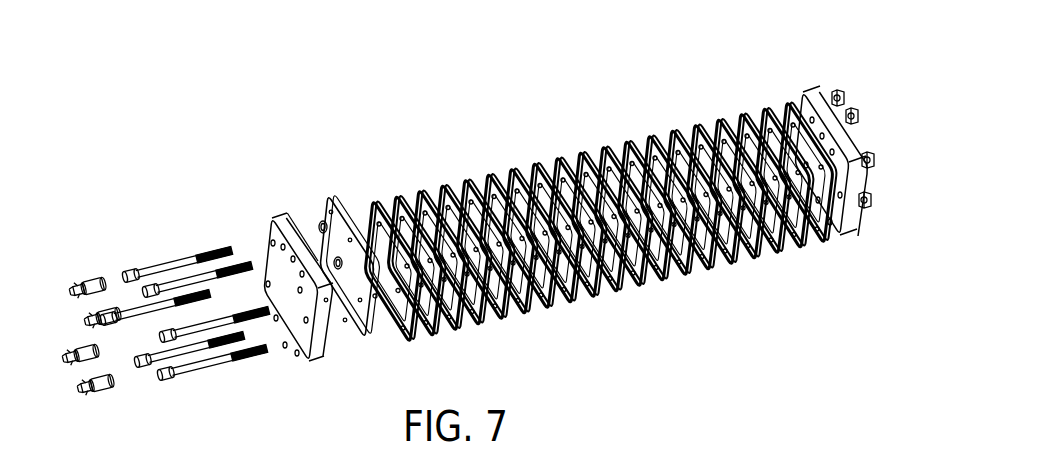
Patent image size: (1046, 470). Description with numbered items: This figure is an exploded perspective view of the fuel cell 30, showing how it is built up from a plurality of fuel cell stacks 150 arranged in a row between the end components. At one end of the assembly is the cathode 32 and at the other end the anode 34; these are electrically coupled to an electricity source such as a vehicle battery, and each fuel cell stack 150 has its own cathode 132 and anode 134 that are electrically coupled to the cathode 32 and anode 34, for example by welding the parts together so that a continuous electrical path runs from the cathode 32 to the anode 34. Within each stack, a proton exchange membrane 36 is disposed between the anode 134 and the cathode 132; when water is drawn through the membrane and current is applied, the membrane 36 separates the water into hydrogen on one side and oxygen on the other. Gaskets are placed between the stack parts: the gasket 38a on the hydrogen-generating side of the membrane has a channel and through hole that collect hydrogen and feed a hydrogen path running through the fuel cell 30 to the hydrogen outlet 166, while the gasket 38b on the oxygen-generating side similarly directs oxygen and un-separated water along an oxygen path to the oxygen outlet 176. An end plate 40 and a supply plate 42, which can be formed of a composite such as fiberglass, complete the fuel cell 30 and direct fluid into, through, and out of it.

The fuel cell 30 is at (280, 86).
The cathode 32 is at (331, 195).
The anode 34 is at (795, 102).
The proton exchange membrane 36 is at (723, 240).
The gasket 38a is at (707, 270).
The gasket 38b is at (743, 253).
The end plate 40 is at (812, 88).
The supply plate 42 is at (283, 217).
The cathode 132 is at (683, 277).
The anode 134 is at (763, 247).
The fuel cell stack 150 is at (453, 171).
The hydrogen outlet 166 is at (277, 233).
The oxygen outlet 176 is at (298, 343).